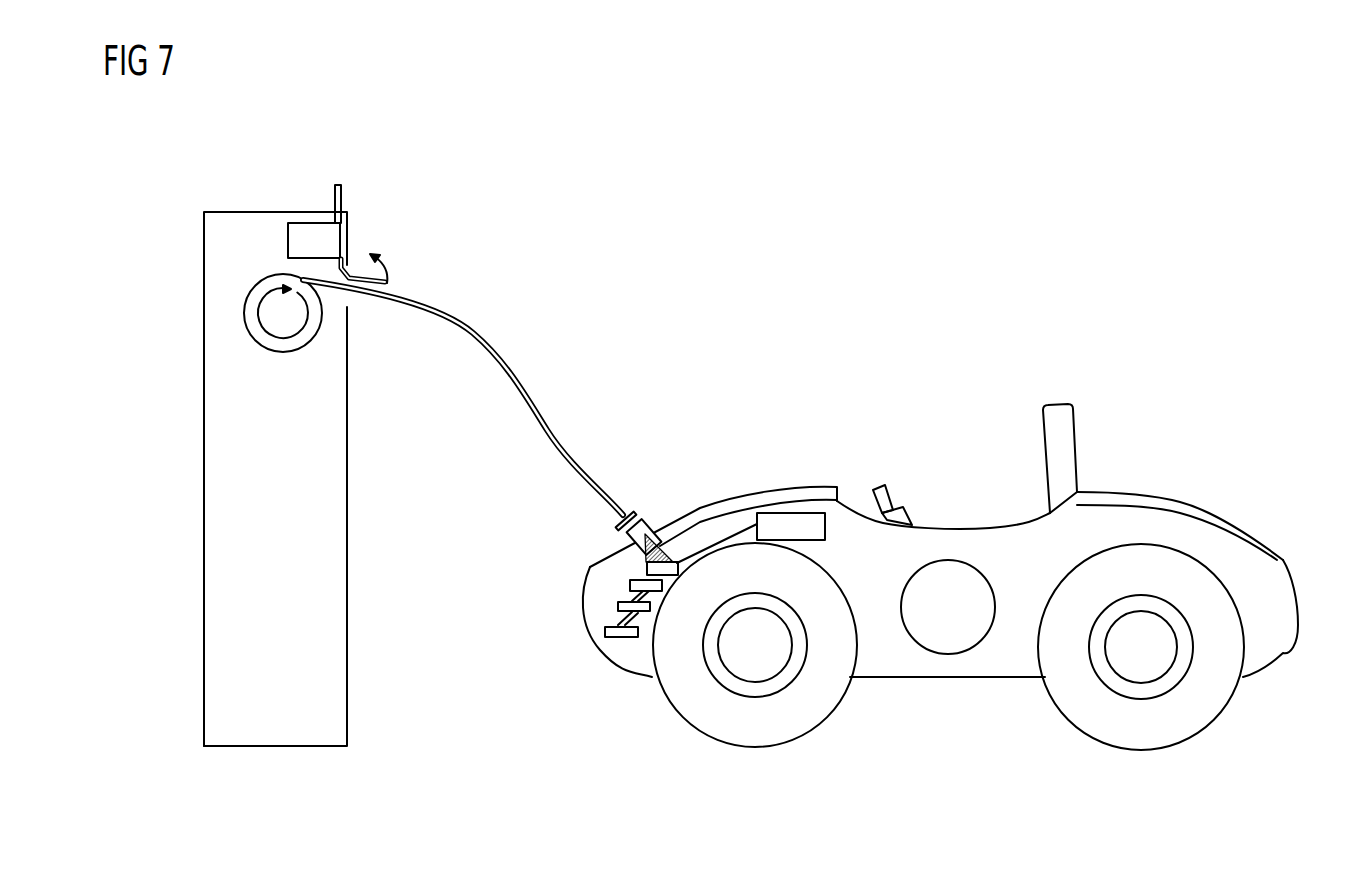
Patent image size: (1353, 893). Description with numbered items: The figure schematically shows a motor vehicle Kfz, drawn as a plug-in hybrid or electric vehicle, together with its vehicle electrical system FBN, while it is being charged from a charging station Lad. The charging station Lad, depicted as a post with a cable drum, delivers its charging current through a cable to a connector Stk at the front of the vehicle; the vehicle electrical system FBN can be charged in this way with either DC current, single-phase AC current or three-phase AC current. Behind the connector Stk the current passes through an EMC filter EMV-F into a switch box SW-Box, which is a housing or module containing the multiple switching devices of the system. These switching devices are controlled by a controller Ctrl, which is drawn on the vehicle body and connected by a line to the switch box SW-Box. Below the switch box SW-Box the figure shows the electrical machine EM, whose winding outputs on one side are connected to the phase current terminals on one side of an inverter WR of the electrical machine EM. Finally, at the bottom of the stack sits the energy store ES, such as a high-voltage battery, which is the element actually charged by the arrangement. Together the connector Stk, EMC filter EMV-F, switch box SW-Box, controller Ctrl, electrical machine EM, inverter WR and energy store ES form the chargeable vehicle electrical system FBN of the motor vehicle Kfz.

The charging station Lad is at (278, 212).
The vehicle electrical system FBN is at (578, 513).
The motor vehicle Kfz is at (1150, 497).
The connector Stk is at (658, 518).
The controller Ctrl is at (788, 513).
The EMC filter EMV-F is at (645, 545).
The switch box SW-Box is at (647, 567).
The electrical machine EM is at (632, 585).
The inverter WR is at (618, 606).
The energy store ES is at (606, 631).